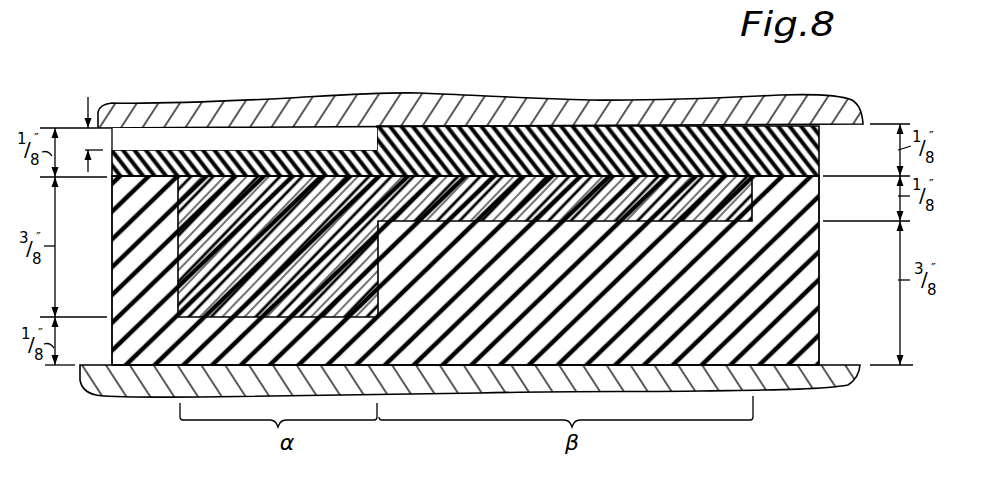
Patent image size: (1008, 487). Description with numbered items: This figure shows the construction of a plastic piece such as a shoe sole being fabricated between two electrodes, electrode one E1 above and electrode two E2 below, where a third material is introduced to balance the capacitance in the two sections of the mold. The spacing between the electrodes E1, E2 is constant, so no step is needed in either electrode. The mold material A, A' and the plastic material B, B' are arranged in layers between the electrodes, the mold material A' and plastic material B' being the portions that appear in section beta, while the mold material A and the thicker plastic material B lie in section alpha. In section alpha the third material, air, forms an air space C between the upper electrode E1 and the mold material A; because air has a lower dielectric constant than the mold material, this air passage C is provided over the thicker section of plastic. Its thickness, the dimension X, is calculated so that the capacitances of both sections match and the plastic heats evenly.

The mold material A is at (244, 118).
The mold material A' is at (598, 121).
The plastic material B is at (278, 192).
The plastic material B' is at (565, 143).
The air space C is at (283, 137).
The thickness of the air space X is at (71, 134).
The electrode 1 E1 is at (480, 100).
The electrode 2 E2 is at (470, 392).